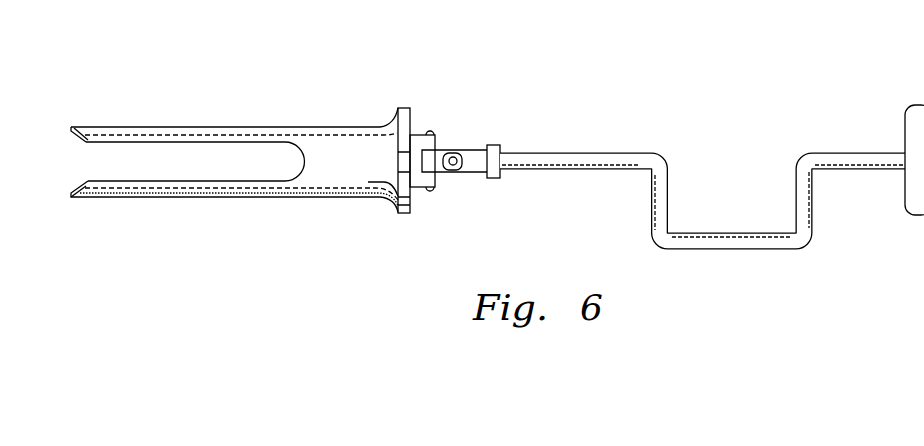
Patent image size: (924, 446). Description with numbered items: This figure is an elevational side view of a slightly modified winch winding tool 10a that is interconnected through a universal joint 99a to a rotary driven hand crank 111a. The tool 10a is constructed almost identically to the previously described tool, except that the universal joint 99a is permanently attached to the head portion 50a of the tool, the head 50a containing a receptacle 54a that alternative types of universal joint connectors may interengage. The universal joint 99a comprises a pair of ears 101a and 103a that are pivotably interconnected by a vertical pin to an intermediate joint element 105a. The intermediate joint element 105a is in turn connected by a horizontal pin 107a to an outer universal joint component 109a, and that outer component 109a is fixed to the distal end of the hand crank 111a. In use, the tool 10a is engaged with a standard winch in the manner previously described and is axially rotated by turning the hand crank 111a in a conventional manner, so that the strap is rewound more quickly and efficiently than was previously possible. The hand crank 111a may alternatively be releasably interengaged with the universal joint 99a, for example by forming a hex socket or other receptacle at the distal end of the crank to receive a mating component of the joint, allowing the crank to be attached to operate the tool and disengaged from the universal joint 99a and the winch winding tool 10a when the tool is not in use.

The winch winding tool 10a is at (317, 99).
The receptacle 54a is at (397, 170).
The head portion 50a is at (405, 108).
The ear 101a is at (436, 188).
The ear 103a is at (423, 132).
The universal joint 99a is at (450, 116).
The intermediate joint element 105a is at (462, 140).
The horizontal pin 107a is at (458, 168).
The outer universal joint component 109a is at (500, 177).
The hand crank 111a is at (693, 233).